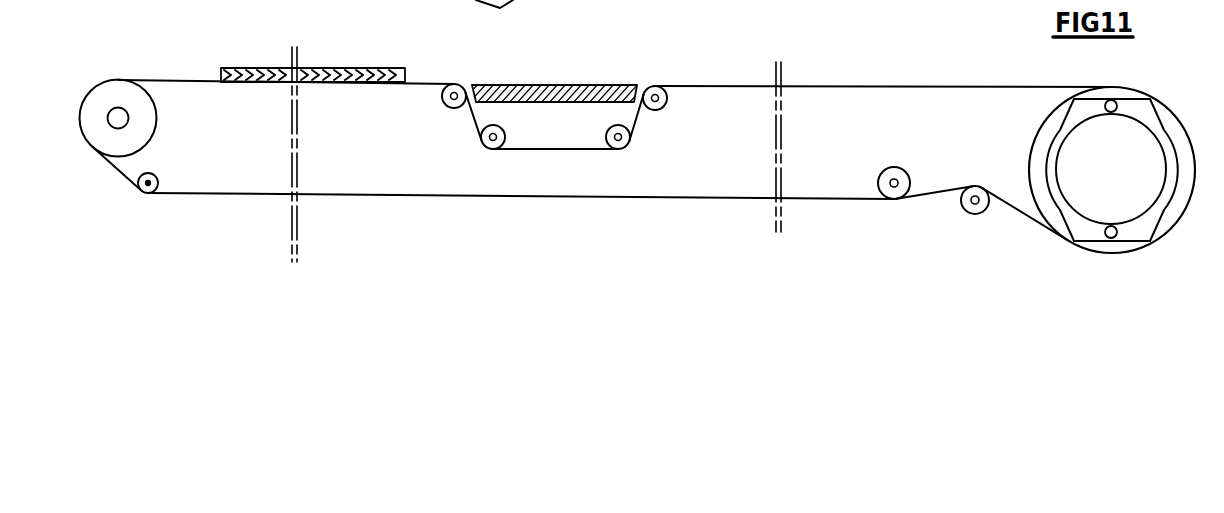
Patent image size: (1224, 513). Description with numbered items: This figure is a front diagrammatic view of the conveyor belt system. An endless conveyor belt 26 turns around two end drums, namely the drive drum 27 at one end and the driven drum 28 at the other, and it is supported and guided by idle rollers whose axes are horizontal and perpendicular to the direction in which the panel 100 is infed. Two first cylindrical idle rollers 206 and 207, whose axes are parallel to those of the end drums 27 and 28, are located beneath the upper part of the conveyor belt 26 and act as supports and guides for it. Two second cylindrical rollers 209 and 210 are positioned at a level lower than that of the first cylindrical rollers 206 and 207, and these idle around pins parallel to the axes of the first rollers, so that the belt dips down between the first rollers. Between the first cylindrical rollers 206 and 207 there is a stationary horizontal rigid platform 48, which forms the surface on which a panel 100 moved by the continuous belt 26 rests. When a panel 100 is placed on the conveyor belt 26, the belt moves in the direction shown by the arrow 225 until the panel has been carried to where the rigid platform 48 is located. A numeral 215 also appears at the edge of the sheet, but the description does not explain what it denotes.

The conveyor belt 26 is at (705, 84).
The drive drum 27 is at (1155, 118).
The driven drum 28 is at (95, 135).
The rigid platform 48 is at (612, 85).
The panel 100 is at (372, 69).
The first cylindrical idle roller 206 is at (445, 101).
The first cylindrical idle roller 207 is at (668, 98).
The second cylindrical roller 209 is at (483, 146).
The second cylindrical roller 210 is at (632, 138).
The element 215 is at (546, 15).
The arrow 225 is at (278, 53).